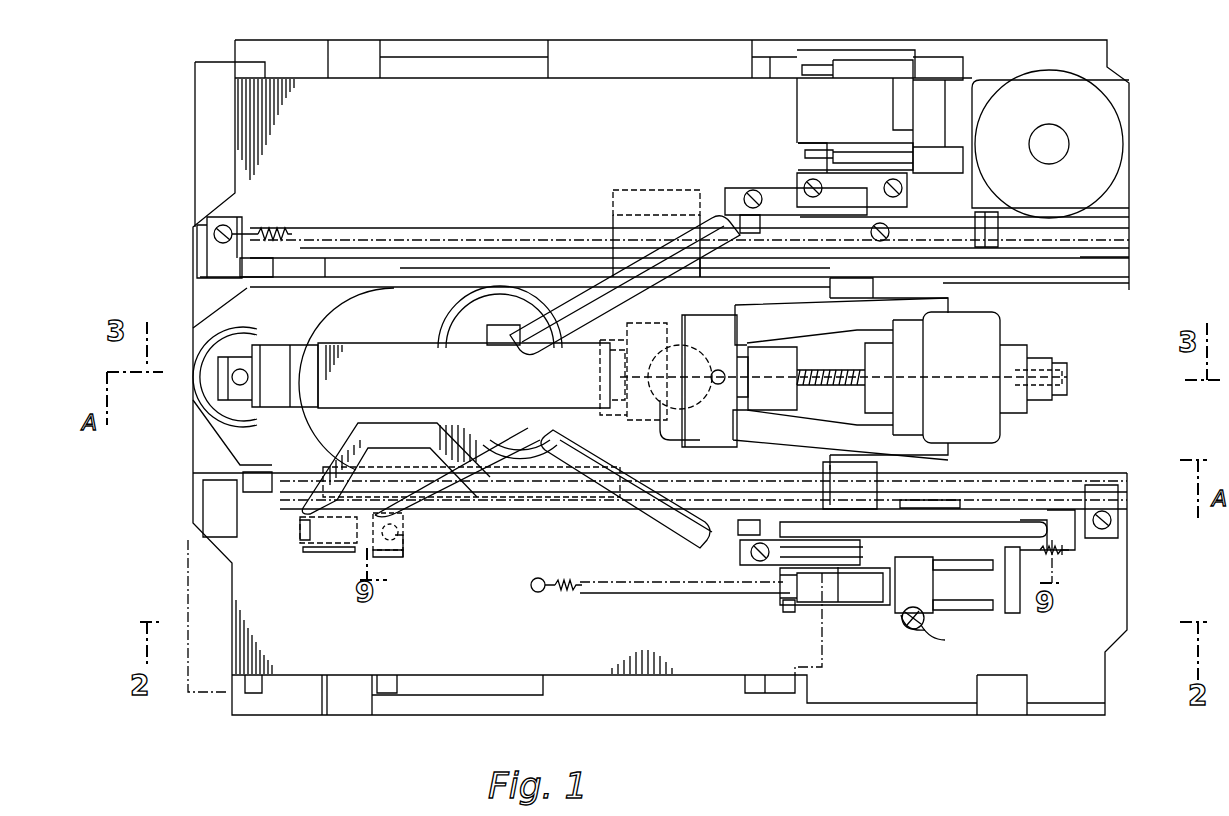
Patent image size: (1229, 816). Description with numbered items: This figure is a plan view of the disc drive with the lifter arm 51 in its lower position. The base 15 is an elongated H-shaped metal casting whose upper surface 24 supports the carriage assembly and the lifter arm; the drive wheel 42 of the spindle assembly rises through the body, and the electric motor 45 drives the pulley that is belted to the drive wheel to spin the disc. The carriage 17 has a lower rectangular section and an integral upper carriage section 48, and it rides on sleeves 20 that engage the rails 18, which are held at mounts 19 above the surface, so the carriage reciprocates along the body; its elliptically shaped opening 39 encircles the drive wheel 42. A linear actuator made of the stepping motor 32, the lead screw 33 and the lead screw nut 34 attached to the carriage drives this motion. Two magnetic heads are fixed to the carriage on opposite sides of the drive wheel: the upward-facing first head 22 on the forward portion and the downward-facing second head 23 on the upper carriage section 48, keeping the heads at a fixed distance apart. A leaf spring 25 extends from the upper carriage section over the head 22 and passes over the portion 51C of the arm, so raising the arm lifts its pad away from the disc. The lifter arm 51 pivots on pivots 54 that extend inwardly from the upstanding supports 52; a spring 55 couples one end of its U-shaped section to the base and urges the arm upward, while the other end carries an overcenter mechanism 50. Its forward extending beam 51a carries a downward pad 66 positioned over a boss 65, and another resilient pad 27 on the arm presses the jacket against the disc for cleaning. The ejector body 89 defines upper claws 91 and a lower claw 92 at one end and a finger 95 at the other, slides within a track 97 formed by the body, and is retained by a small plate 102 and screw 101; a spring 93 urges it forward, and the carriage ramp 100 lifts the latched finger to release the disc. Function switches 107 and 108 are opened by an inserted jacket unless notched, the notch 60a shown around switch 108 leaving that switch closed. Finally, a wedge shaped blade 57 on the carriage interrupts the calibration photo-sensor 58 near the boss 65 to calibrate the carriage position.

The base 15 is at (718, 748).
The carriage 17 is at (314, 290).
The rails 18 is at (362, 262).
The mounts 19 is at (215, 270).
The sleeves 20 is at (290, 264).
The first magnetic head 22 is at (228, 358).
The second magnetic head 23 is at (692, 346).
The upper surface 24 is at (460, 510).
The leaf spring 25 is at (464, 375).
The resilient pad 27 is at (606, 192).
The stepping motor 32 is at (992, 330).
The lead screw 33 is at (843, 374).
The lead screw nut 34 is at (633, 371).
The elliptically shaped opening 39 is at (322, 305).
The drive wheel 42 is at (458, 326).
The electric motor 45 is at (1118, 137).
The upper carriage section 48 is at (840, 379).
The overcenter mechanism 50 is at (1030, 233).
The lifter arm 51 is at (670, 506).
The forward extending beam 51a is at (342, 462).
The portion of the arm 51C is at (503, 325).
The supports 52 is at (777, 190).
The pivots 54 is at (742, 232).
The spring 55 is at (1062, 563).
The wedge shaped blade 57 is at (406, 538).
The calibration photo-sensor 58 is at (418, 572).
The notch 60a is at (823, 143).
The boss 65 is at (290, 548).
The pad 66 is at (303, 552).
The ejector body 89 is at (852, 612).
The upper claws 91 is at (790, 604).
The lower claw 92 is at (790, 590).
The spring 93 is at (648, 590).
The finger 95 is at (1018, 590).
The track 97 is at (924, 626).
The ramp 100 is at (960, 502).
The screw 101 is at (908, 630).
The small plate 102 is at (910, 590).
The function switch 107 is at (851, 62).
The function switch 108 is at (855, 160).